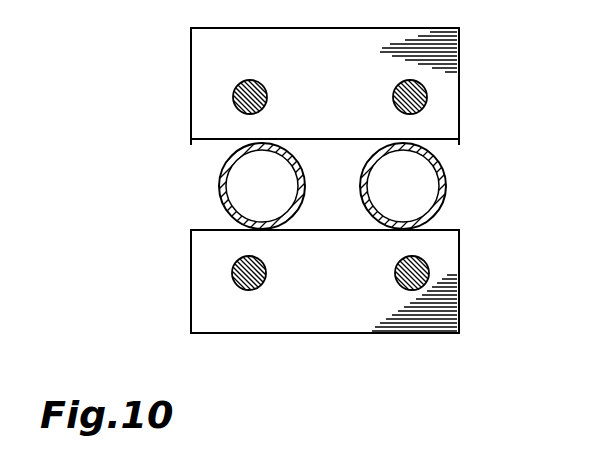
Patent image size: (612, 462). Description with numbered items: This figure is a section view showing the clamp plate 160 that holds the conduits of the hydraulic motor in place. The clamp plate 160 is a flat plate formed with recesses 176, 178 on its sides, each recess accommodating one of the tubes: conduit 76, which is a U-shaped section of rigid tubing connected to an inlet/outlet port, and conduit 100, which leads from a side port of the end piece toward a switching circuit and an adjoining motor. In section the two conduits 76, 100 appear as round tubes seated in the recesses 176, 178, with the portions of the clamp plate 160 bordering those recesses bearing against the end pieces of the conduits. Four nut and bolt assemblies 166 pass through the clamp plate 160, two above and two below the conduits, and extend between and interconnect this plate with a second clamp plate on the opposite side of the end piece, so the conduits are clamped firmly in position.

The clamp plate 160 is at (307, 322).
The conduit 100 is at (221, 190).
The conduit 76 is at (443, 207).
The recess 176 is at (459, 146).
The recess 178 is at (191, 146).
The nut and bolt assemblies 166 is at (253, 80).